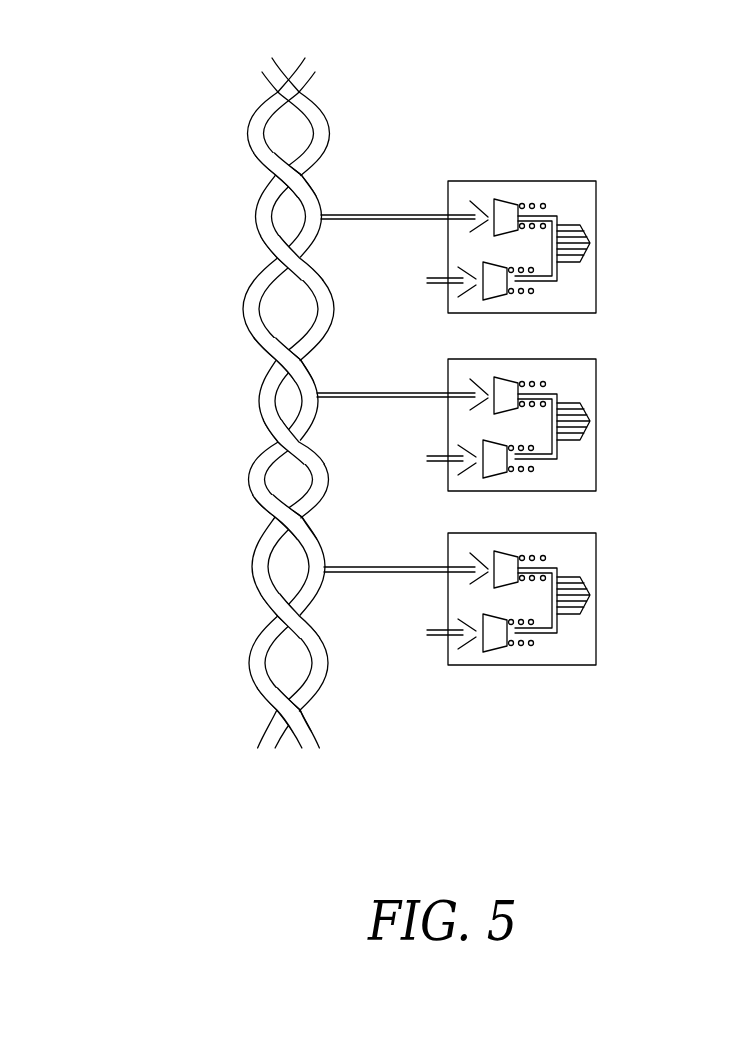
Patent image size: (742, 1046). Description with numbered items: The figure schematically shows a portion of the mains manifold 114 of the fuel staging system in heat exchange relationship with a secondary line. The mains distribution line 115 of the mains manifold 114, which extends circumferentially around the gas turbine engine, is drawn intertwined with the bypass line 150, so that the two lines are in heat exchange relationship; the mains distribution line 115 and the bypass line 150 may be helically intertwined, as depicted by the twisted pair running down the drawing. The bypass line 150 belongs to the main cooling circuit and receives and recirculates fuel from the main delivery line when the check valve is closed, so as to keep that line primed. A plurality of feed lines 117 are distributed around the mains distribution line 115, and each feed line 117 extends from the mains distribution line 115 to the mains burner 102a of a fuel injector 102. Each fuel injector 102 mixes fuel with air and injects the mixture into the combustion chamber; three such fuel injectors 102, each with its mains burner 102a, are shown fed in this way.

The mains manifold 114 is at (270, 403).
The bypass line 150 is at (256, 217).
The mains distribution line 115 is at (319, 190).
The feed line 117 is at (377, 221).
The fuel injector 102 is at (558, 214).
The mains burner 102a is at (503, 200).